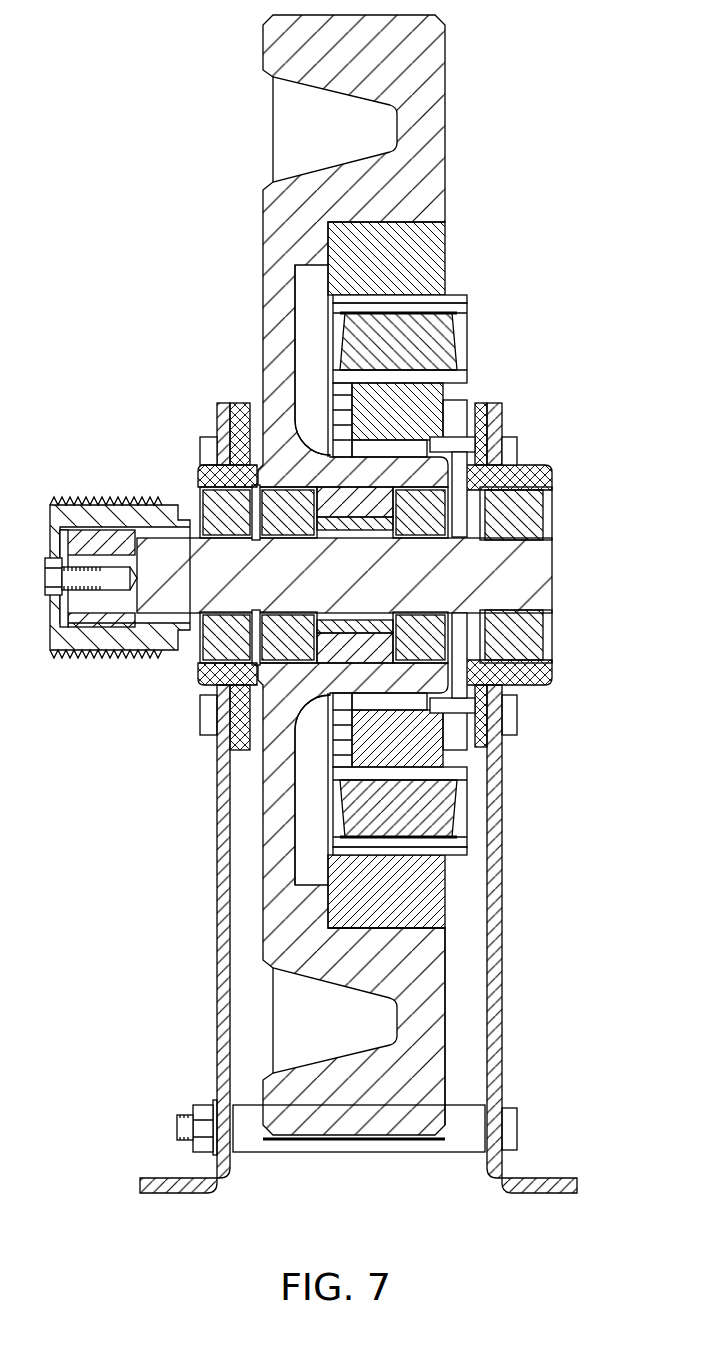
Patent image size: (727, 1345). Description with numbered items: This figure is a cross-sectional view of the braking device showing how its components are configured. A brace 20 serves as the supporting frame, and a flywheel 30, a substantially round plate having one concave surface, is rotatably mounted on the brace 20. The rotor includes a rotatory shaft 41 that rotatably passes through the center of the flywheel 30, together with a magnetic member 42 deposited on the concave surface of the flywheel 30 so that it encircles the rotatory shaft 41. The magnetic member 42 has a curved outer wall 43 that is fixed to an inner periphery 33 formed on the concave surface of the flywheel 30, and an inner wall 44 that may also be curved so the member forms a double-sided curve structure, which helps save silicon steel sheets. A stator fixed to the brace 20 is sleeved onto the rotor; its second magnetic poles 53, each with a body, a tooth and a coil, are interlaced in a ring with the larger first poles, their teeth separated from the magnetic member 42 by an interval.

The brace 20 is at (222, 1008).
The flywheel 30 is at (427, 1075).
The inner periphery 33 is at (400, 930).
The rotatory shaft 41 is at (512, 578).
The magnetic member 42 is at (405, 888).
The outer wall 43 is at (380, 905).
The inner wall 44 is at (393, 857).
The second magnetic pole 53 is at (418, 810).